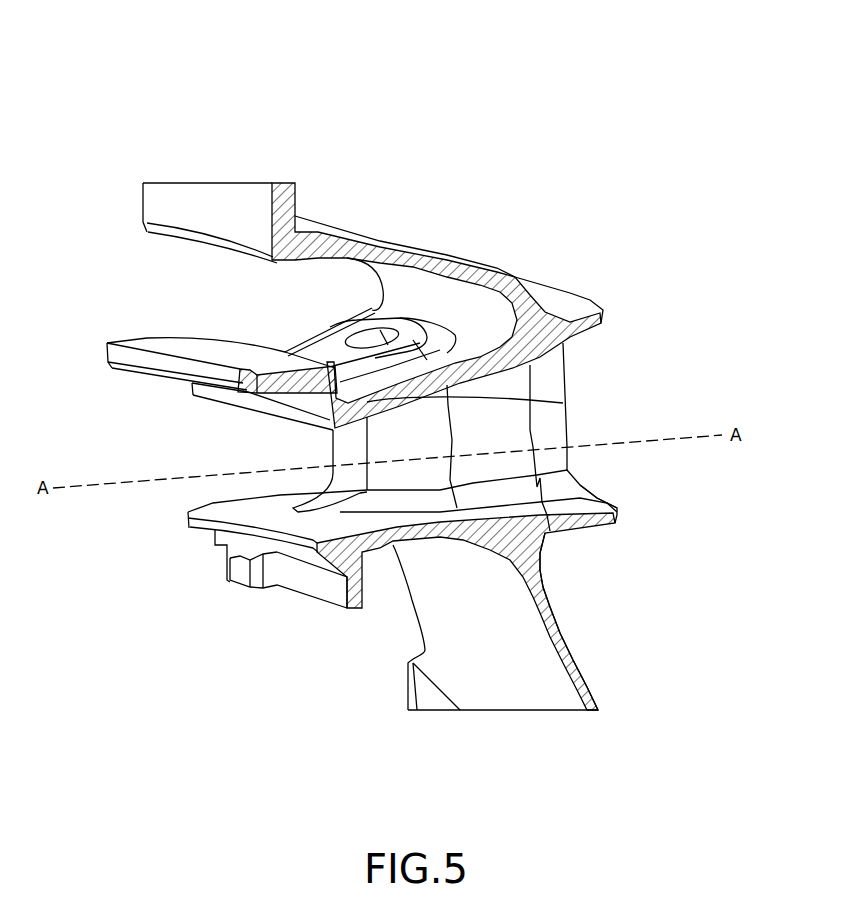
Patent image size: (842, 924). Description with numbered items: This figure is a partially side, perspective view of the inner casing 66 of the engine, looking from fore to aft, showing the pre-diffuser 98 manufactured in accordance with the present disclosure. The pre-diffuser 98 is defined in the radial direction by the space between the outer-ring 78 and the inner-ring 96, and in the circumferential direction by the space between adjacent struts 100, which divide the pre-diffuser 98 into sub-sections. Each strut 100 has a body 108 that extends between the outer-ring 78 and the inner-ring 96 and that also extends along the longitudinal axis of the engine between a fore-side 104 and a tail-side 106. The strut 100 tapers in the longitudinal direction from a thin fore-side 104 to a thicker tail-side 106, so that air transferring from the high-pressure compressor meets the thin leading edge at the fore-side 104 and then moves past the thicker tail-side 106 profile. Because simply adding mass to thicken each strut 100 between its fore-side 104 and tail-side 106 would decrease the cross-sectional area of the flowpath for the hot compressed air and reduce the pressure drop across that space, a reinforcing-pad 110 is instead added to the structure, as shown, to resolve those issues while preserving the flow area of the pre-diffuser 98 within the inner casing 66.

The vane assembly 66 is at (455, 100).
The outer-ring 78 is at (604, 308).
The inner-ring 96 is at (618, 518).
The pre-diffuser 98 is at (383, 548).
The strut 100 is at (527, 417).
The fore-side 104 is at (330, 445).
The tail-side 106 is at (563, 375).
The body 108 is at (503, 468).
The reinforcing-pad 110 is at (587, 530).